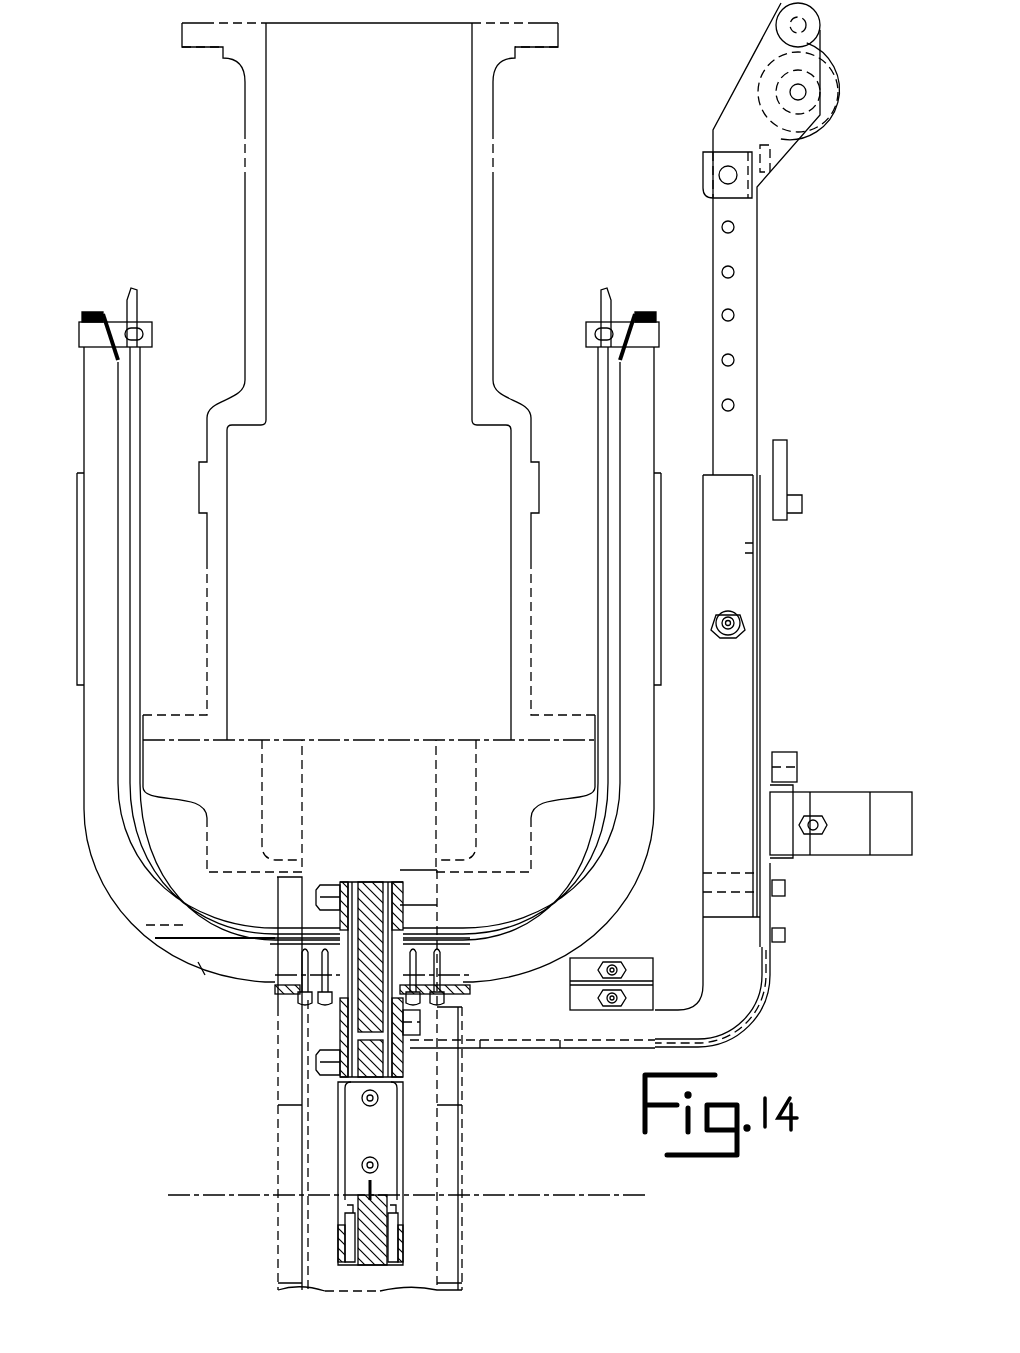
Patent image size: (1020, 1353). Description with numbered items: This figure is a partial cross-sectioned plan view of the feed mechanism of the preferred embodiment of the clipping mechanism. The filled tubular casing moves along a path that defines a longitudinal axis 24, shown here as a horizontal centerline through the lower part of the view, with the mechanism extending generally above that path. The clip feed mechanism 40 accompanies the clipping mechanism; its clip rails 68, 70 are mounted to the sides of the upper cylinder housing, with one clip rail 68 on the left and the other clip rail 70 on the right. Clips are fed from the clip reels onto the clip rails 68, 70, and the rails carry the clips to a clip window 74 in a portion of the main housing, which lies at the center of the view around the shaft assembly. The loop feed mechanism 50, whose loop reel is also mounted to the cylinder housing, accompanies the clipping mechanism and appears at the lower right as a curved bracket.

The longitudinal axis 24 is at (607, 1195).
The clip feed mechanism 40 is at (224, 977).
The loop feed mechanism 50 is at (750, 1022).
The clip rail 68 is at (95, 595).
The clip rail 70 is at (742, 683).
The clip window 74 is at (330, 930).